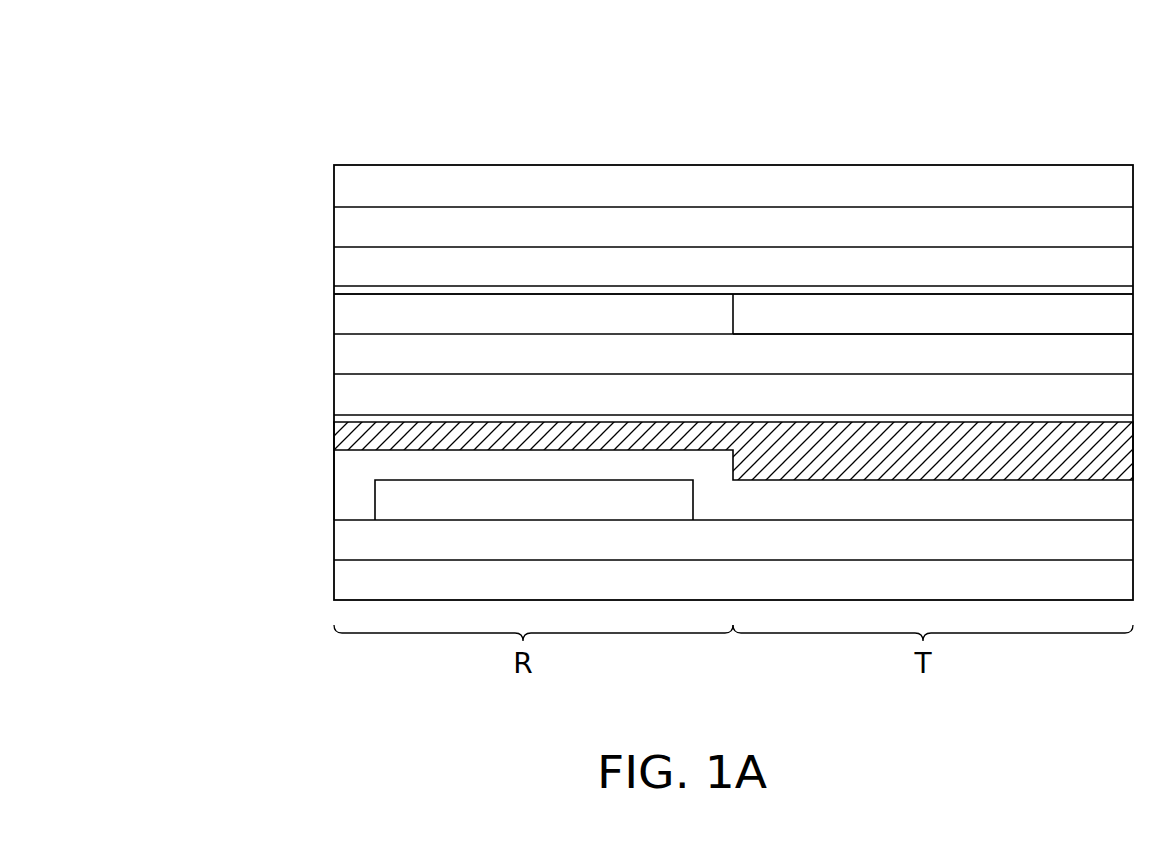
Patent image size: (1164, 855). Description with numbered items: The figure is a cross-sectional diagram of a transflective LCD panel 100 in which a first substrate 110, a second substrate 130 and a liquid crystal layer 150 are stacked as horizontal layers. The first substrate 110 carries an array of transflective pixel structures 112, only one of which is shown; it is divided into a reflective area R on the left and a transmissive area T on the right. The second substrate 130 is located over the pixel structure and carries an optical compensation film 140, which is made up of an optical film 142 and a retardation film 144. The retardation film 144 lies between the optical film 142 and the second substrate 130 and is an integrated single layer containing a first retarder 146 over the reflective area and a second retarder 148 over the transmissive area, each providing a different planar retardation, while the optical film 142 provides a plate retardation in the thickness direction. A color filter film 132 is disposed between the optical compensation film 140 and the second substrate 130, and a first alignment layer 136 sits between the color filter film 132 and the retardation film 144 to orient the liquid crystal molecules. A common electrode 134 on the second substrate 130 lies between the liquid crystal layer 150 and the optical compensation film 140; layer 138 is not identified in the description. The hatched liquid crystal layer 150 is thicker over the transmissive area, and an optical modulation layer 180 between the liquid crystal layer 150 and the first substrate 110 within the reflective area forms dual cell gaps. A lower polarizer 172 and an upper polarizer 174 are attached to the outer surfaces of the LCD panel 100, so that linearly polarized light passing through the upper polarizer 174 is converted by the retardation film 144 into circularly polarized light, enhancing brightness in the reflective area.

The LCD panel 100 is at (1141, 706).
The first substrate 110 is at (345, 541).
The transflective pixel structure 112 is at (326, 468).
The second substrate 130 is at (345, 230).
The color filter film 132 is at (345, 267).
The common electrode 134 is at (345, 396).
The first alignment layer 136 is at (342, 291).
The alignment layer 138 is at (345, 418).
The optical compensation film 140 is at (745, 69).
The optical film 142 is at (628, 355).
The retardation film 144 is at (793, 112).
The first retarder 146 is at (683, 310).
The second retarder 148 is at (779, 310).
The liquid crystal layer 150 is at (345, 438).
The lower polarizer 172 is at (345, 580).
The upper polarizer 174 is at (345, 188).
The optical modulation layer 180 is at (390, 502).